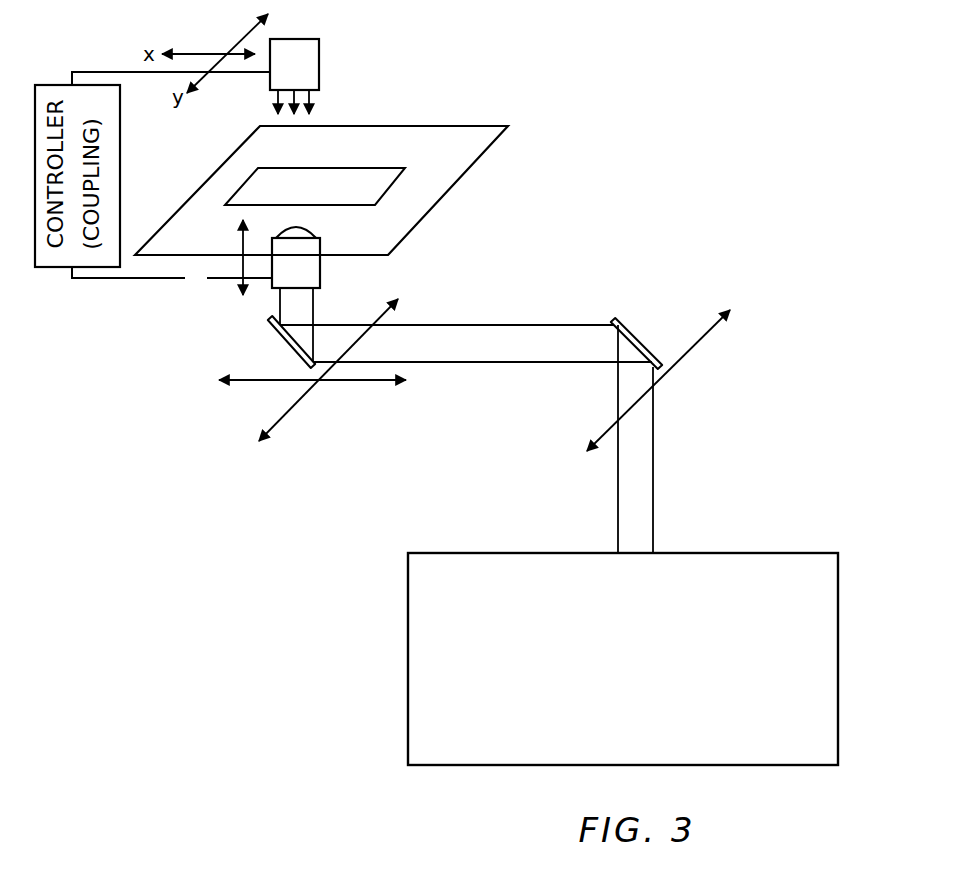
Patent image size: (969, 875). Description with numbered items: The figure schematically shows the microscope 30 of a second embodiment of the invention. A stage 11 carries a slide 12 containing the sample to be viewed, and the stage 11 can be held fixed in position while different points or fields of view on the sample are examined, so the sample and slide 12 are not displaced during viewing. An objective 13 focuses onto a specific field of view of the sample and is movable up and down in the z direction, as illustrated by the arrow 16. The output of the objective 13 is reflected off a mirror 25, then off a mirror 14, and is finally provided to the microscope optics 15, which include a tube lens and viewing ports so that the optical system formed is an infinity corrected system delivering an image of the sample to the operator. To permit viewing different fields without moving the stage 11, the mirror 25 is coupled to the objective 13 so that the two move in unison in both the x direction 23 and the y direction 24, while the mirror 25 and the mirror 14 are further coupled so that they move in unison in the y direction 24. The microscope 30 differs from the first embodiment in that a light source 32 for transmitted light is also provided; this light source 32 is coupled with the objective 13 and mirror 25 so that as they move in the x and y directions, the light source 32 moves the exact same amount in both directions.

The stage 11 is at (477, 153).
The slide 12 is at (387, 175).
The objective 13 is at (320, 265).
The mirror 14 is at (635, 340).
The microscope optics 15 is at (838, 627).
The arrow 16 is at (239, 263).
The x direction 23 is at (375, 385).
The y direction 24 is at (283, 417).
The mirror 25 is at (287, 347).
The microscope 30 is at (604, 196).
The light source 32 is at (319, 63).